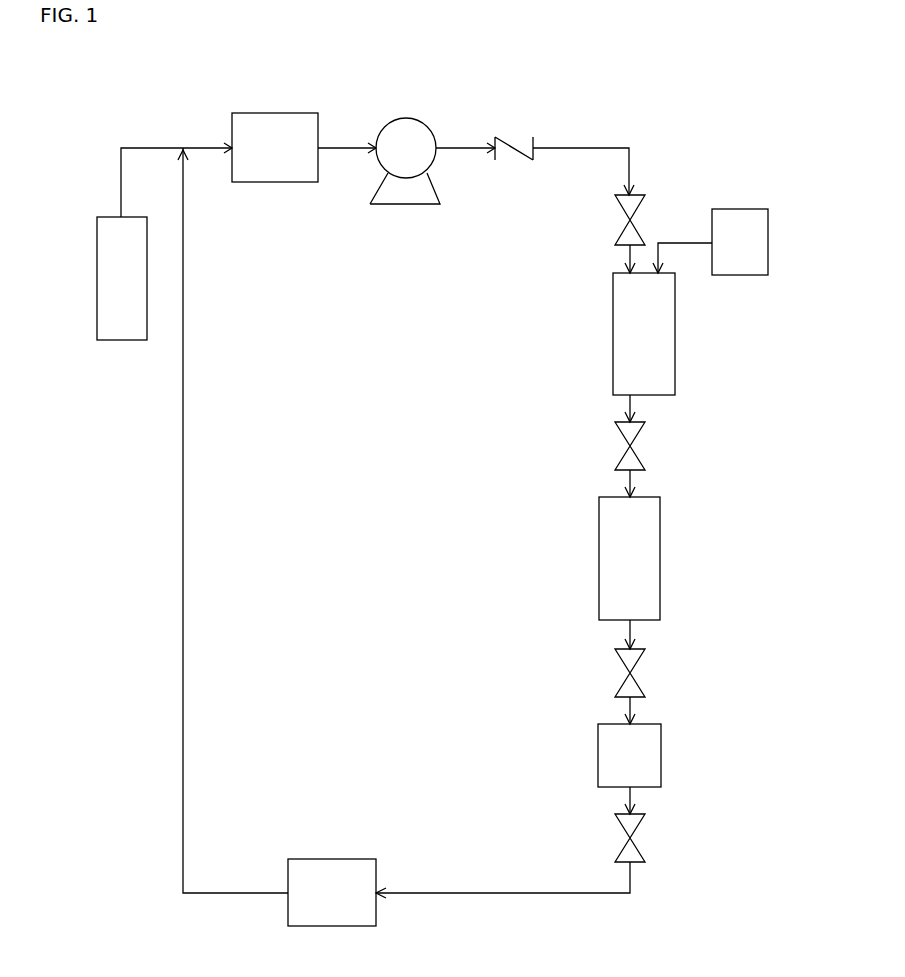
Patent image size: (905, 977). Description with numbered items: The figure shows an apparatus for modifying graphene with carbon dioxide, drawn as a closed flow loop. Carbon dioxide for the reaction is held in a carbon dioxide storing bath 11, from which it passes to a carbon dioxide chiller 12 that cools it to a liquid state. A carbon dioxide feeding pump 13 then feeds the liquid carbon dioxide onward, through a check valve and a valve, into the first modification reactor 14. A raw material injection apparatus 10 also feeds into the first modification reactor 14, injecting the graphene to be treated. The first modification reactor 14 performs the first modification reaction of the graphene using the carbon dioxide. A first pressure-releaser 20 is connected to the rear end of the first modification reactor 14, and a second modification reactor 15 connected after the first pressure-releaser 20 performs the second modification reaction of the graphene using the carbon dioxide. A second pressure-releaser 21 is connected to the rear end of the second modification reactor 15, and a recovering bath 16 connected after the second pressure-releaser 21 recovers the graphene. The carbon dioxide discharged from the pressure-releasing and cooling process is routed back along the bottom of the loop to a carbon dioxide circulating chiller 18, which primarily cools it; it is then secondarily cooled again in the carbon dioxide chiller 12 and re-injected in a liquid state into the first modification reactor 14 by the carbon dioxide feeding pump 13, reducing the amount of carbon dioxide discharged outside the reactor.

The raw material injection apparatus 10 is at (768, 232).
The carbon dioxide storing bath 11 is at (100, 340).
The carbon dioxide chiller 12 is at (262, 113).
The carbon dioxide feeding pump 13 is at (418, 120).
The first modification reactor 14 is at (675, 348).
The second modification reactor 15 is at (660, 548).
The recovering bath 16 is at (661, 760).
The carbon dioxide circulating chiller 18 is at (352, 859).
The first pressure-releaser 20 is at (645, 465).
The second pressure-releaser 21 is at (645, 692).